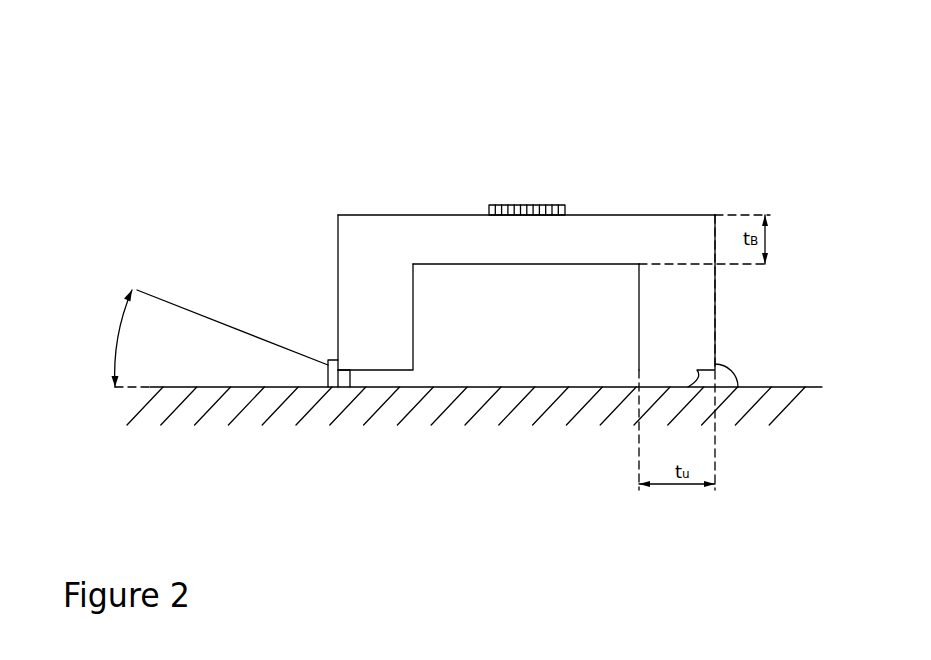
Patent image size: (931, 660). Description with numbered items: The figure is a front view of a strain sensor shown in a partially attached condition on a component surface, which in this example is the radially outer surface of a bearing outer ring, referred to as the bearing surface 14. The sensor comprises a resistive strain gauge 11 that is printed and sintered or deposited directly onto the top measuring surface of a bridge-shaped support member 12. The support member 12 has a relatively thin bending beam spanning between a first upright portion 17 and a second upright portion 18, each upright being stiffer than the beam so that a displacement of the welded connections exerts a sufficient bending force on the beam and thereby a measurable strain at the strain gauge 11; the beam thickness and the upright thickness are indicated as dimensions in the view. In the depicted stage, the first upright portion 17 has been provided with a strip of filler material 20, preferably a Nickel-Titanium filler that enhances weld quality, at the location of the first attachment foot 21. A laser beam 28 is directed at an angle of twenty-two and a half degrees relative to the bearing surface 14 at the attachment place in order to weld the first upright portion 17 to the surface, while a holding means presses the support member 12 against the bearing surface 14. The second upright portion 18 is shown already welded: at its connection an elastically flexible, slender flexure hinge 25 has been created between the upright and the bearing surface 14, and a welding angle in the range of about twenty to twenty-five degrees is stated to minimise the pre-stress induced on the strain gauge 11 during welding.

The resistive strain gauge 11 is at (523, 205).
The support member 12 is at (724, 197).
The bearing surface 14 is at (762, 488).
The first upright portion 17 is at (358, 306).
The second upright portion 18 is at (688, 298).
The strip of filler material 20 is at (328, 383).
The first attachment foot 21 is at (347, 380).
The flexure hinge 25 is at (723, 367).
The laser beam 28 is at (180, 307).